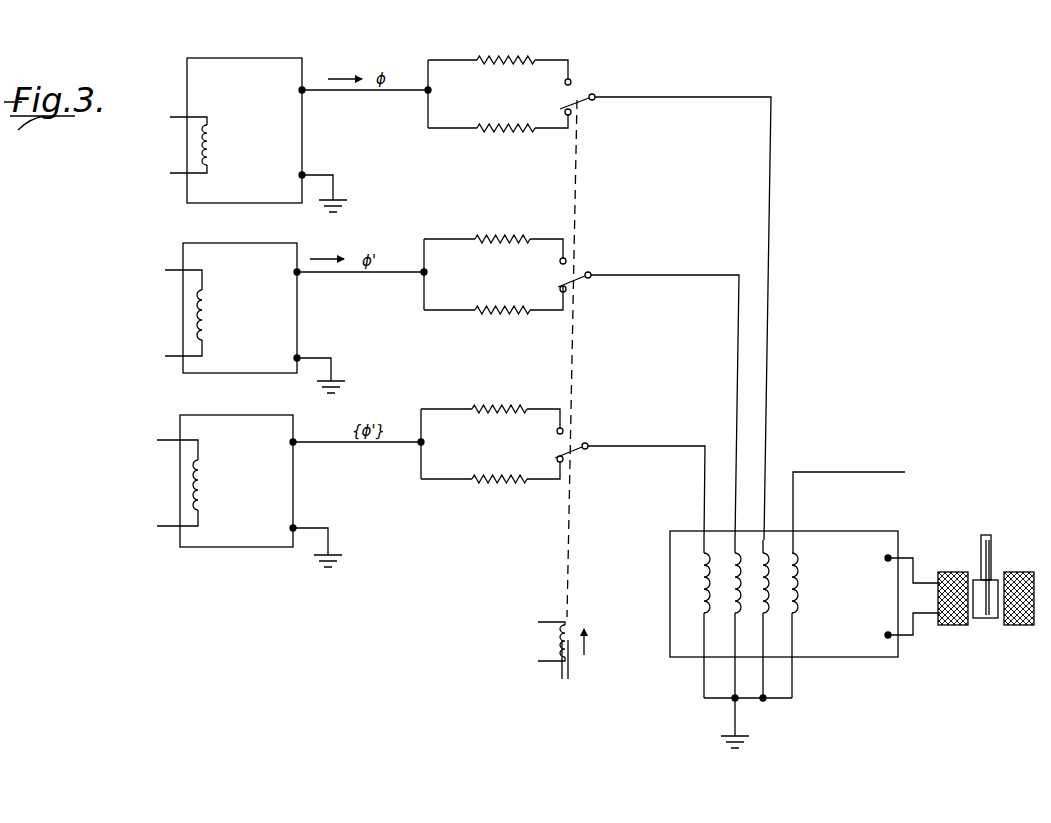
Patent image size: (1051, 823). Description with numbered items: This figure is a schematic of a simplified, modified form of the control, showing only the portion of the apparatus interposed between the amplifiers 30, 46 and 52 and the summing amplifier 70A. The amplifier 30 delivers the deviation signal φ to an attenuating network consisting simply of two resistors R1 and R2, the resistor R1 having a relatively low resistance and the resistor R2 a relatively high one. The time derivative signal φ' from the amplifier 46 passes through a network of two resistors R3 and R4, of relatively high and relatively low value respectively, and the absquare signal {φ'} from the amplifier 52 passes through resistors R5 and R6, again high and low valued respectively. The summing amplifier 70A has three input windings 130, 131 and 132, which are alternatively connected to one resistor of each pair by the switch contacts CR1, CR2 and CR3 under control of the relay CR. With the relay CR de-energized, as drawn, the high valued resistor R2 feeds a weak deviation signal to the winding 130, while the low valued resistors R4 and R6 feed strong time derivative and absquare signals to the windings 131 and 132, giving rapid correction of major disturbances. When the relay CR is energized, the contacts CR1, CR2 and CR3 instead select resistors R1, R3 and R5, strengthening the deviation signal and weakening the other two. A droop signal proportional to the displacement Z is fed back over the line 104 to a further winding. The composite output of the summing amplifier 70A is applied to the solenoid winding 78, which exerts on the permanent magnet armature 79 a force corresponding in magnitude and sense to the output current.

The amplifier 30 is at (207, 58).
The amplifier 46 is at (195, 243).
The amplifier 52 is at (193, 415).
The resistor R1 is at (490, 59).
The resistor R2 is at (476, 129).
The resistor R3 is at (490, 226).
The resistor R4 is at (478, 311).
The resistor R5 is at (484, 408).
The resistor R6 is at (473, 480).
The switch contact CR1 is at (580, 93).
The switch contact CR2 is at (580, 272).
The switch contact CR3 is at (573, 444).
The control relay CR is at (578, 652).
The input winding 132 is at (698, 566).
The input winding 131 is at (730, 622).
The input winding 130 is at (767, 622).
The line 104 is at (824, 471).
The summing amplifier 70A is at (815, 540).
The solenoid winding 78 is at (952, 624).
The permanent magnet armature 79 is at (990, 616).